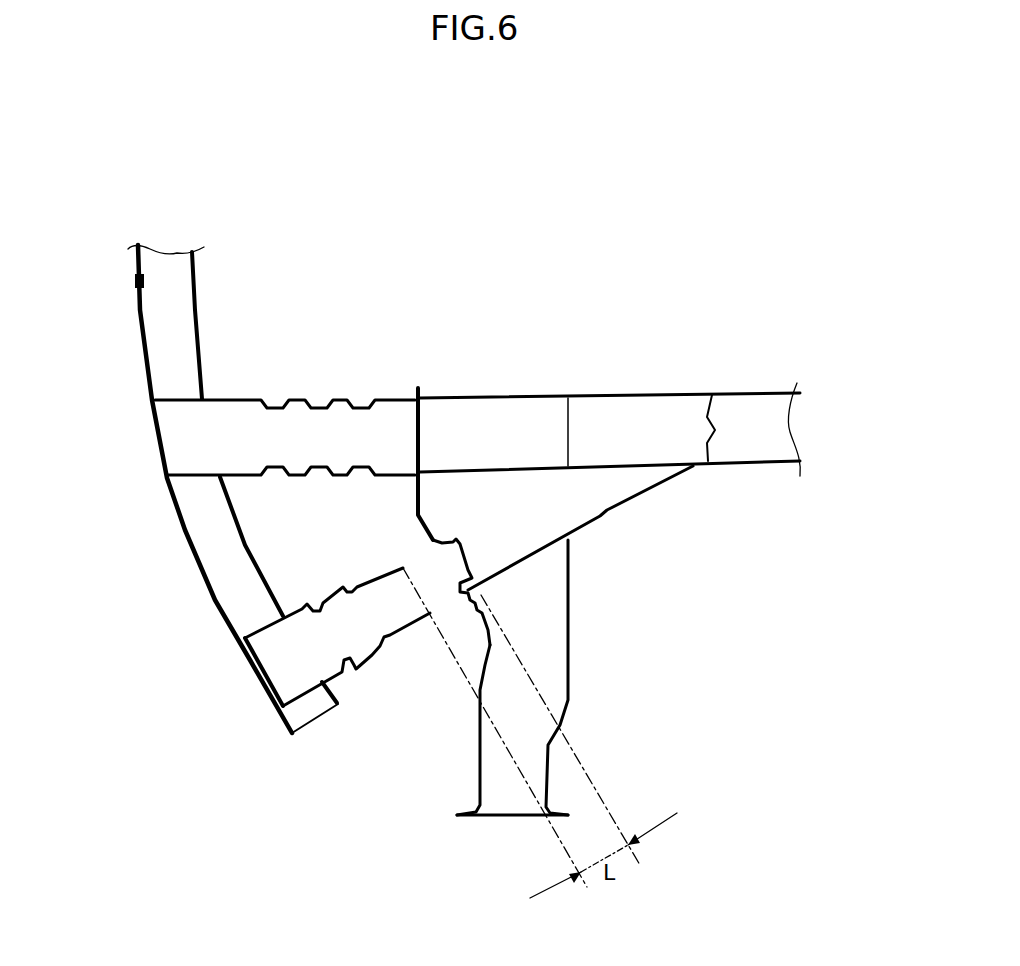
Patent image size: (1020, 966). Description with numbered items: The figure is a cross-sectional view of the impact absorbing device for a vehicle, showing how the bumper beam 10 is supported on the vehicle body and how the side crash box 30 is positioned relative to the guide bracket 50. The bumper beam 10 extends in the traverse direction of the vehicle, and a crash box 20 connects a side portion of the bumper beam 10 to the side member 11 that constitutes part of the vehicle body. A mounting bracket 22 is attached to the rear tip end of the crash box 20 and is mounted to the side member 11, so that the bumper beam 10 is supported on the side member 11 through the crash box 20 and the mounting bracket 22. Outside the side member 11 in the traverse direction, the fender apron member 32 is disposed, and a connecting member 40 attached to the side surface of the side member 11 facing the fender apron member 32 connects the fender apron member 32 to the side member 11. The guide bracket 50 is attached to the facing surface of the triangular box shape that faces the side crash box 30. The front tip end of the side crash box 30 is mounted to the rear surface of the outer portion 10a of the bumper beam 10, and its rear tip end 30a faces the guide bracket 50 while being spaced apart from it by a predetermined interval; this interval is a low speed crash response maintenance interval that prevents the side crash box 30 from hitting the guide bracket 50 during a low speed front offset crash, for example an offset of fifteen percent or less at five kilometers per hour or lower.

The bumper beam 10 is at (223, 618).
The outer portions of the bumper beam 10a is at (257, 675).
The crash box 20 is at (292, 400).
The mounting bracket 22 is at (413, 398).
The side member 11 is at (480, 398).
The guide bracket 50 is at (458, 543).
The connecting member 40 is at (635, 497).
The fender apron member 32 is at (545, 588).
The side crash box 30 is at (340, 672).
The rear tip end of the side crash box 30a is at (412, 577).